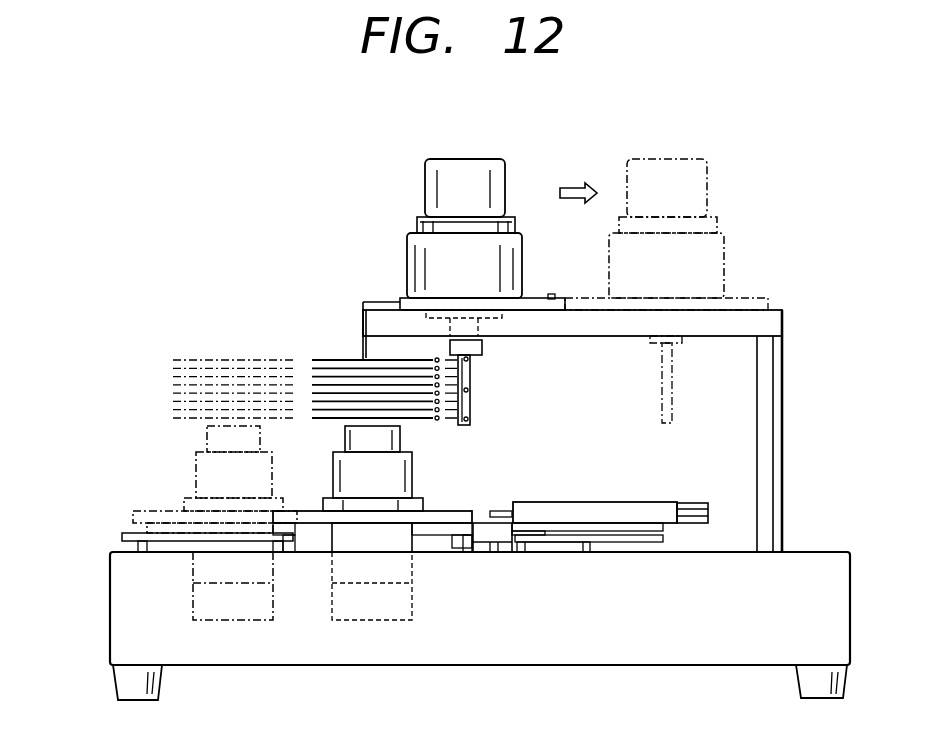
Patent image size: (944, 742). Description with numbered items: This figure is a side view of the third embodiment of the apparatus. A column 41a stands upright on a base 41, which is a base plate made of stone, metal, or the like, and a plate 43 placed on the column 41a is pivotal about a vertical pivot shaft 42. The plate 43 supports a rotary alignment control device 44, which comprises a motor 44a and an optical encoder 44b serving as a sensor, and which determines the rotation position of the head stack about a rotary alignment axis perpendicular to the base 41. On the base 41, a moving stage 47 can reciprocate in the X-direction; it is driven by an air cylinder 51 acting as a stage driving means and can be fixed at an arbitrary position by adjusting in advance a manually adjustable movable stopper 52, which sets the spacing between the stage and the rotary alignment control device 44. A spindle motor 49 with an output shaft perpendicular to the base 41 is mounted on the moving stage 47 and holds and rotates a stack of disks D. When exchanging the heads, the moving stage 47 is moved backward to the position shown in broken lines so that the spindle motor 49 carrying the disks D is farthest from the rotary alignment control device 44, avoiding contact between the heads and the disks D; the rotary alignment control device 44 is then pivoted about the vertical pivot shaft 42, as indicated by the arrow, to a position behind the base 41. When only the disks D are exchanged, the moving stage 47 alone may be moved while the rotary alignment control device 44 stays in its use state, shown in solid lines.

The base 41 is at (137, 610).
The column 41a is at (770, 390).
The vertical pivot shaft 42 is at (550, 294).
The plate 43 is at (385, 302).
The rotary alignment control device 44 is at (376, 227).
The motor 44a is at (438, 258).
The optical encoder 44b is at (443, 188).
The moving stage 47 is at (312, 518).
The spindle motor 49 is at (383, 542).
The air cylinder 51 is at (658, 507).
The movable stopper 52 is at (490, 535).
The disks D is at (333, 358).